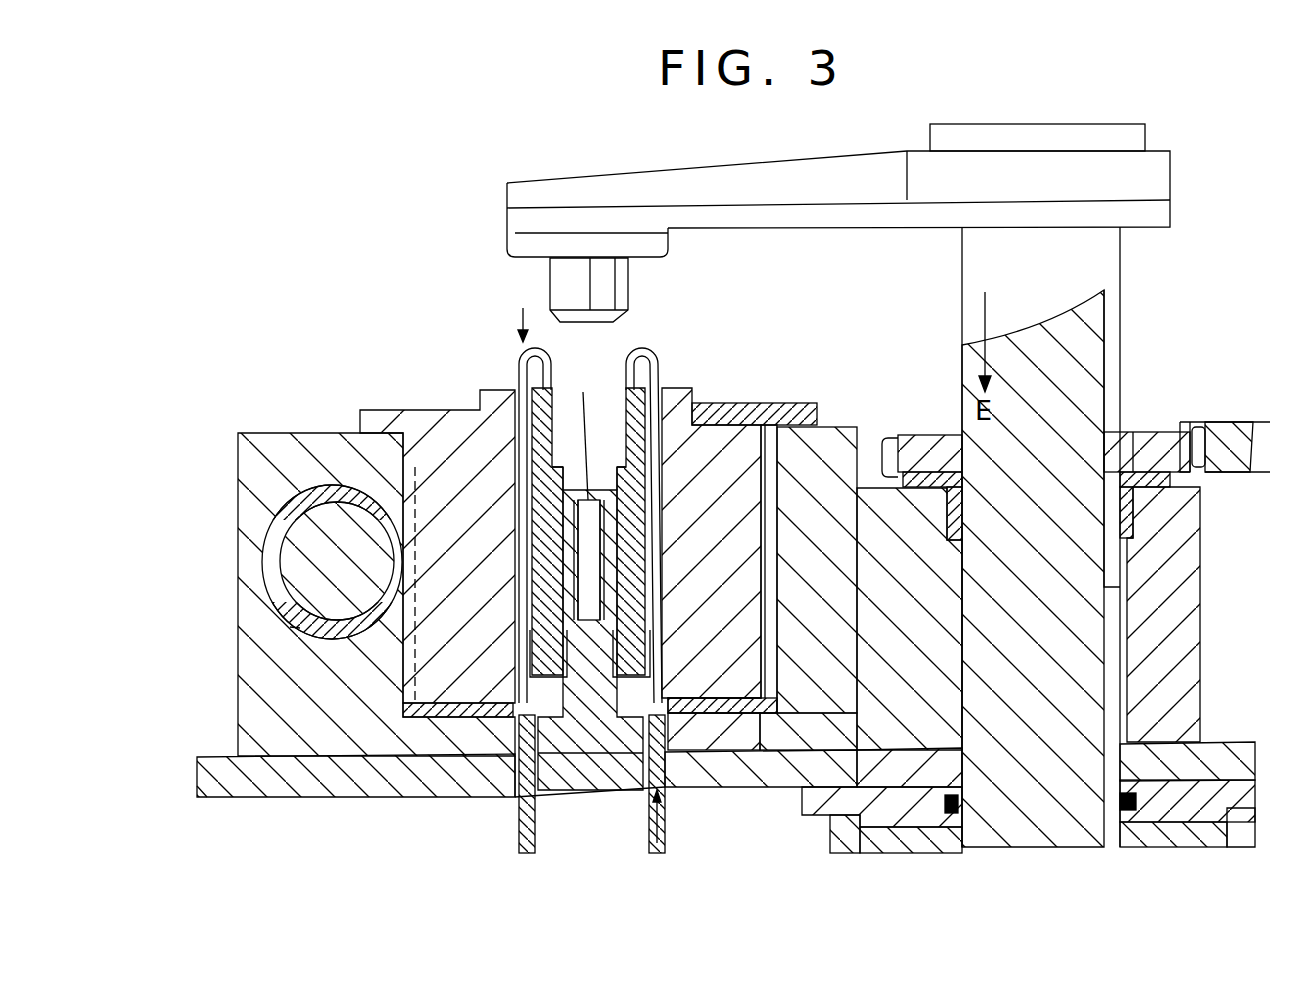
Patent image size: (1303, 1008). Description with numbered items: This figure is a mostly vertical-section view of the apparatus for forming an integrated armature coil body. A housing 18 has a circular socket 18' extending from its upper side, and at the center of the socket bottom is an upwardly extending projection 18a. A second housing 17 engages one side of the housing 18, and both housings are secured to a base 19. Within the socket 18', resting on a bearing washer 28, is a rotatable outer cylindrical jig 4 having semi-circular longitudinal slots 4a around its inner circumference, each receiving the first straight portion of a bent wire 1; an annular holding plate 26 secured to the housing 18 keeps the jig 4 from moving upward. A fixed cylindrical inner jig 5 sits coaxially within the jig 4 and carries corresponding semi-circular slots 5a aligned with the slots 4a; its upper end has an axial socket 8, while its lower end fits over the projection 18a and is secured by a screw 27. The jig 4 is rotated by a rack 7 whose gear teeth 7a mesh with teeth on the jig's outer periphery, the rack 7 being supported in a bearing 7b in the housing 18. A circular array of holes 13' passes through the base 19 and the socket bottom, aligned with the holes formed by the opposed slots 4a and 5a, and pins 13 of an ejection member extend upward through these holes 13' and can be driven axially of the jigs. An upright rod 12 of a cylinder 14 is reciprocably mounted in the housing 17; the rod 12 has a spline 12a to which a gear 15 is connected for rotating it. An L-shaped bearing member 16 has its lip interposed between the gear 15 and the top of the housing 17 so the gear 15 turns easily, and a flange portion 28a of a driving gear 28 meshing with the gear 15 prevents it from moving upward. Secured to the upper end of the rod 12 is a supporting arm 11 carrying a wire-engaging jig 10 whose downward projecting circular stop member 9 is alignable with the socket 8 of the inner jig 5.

The bent wire 1 is at (518, 368).
The outer cylindrical jig 4 is at (725, 450).
The slots in the outer jig 4a is at (515, 653).
The fixed cylindrical inner jig 5 is at (627, 667).
The slots in the inner jig 5a is at (533, 677).
The rack 7 is at (305, 578).
The gear teeth on the rack 7a is at (300, 628).
The bearing 7b is at (265, 540).
The axial socket 8 is at (657, 390).
The circular stop member 9 is at (617, 300).
The wire-engaging jig 10 is at (653, 243).
The supporting arm 11 is at (770, 172).
The upright rod 12 is at (1053, 333).
The spline 12a is at (1112, 353).
The pins of the ejection member 13 is at (679, 784).
The holes 13' is at (505, 810).
The cylinder 14 is at (1175, 835).
The gear 15 is at (1178, 477).
The L-shaped bearing member 16 is at (1178, 497).
The housing 17 is at (1190, 628).
The housing 18 is at (343, 615).
The circular socket 18' is at (722, 569).
The projection 18a is at (587, 750).
The base 19 is at (330, 775).
The annular holding plate 26 is at (770, 405).
The screw 27 is at (585, 431).
The driving gear 28 is at (430, 715).
The flange portion 28a is at (1185, 425).